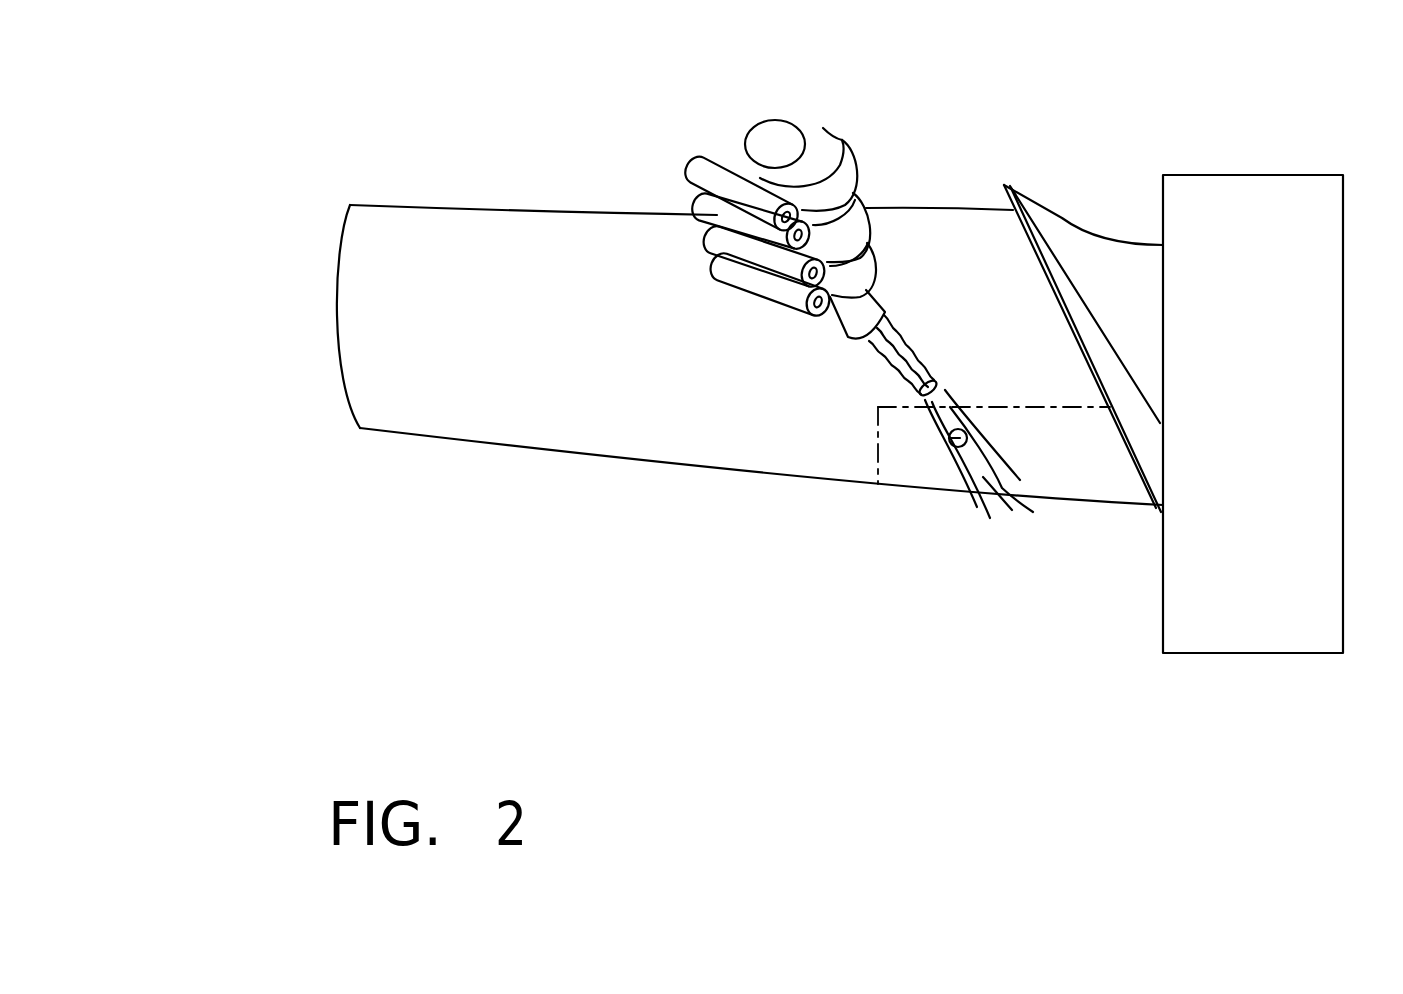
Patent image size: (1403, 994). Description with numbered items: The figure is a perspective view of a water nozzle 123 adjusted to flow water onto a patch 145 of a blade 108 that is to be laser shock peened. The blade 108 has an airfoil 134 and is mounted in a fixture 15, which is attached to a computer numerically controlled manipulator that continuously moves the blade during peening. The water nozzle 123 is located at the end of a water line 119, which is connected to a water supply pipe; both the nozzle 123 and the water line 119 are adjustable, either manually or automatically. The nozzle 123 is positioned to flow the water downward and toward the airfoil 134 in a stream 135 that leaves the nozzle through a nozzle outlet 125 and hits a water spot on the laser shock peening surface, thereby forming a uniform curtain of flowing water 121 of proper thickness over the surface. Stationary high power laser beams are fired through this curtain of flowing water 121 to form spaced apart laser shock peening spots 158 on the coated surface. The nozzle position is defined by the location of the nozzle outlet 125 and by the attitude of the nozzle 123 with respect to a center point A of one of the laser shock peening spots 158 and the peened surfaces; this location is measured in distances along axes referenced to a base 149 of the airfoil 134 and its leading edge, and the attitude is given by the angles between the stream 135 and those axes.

The blade 108 is at (1010, 103).
The water line 119 is at (823, 128).
The water nozzle 123 is at (870, 292).
The nozzle outlet 125 is at (882, 322).
The stream 135 is at (918, 367).
The curtain of flowing water 121 is at (995, 444).
The laser shock peening spots 158 is at (983, 477).
The patch 145 is at (877, 443).
The airfoil 134 is at (577, 346).
The base 149 is at (1087, 347).
The fixture 15 is at (1211, 652).
The center point A is at (948, 442).